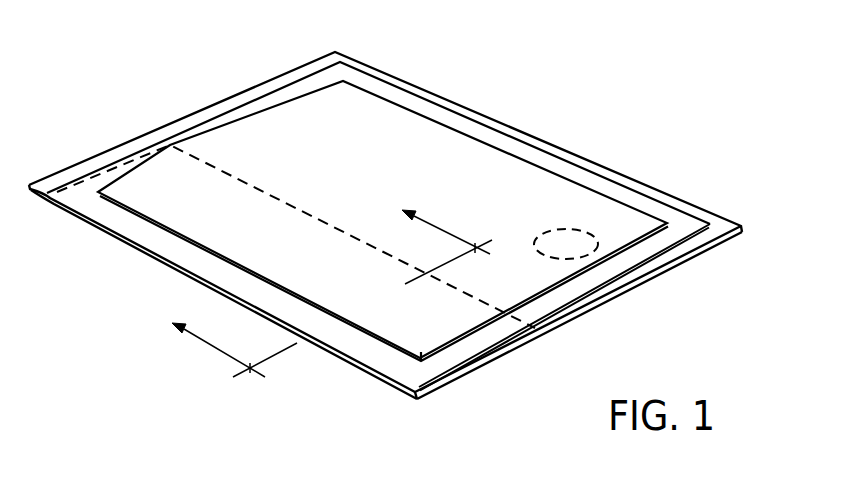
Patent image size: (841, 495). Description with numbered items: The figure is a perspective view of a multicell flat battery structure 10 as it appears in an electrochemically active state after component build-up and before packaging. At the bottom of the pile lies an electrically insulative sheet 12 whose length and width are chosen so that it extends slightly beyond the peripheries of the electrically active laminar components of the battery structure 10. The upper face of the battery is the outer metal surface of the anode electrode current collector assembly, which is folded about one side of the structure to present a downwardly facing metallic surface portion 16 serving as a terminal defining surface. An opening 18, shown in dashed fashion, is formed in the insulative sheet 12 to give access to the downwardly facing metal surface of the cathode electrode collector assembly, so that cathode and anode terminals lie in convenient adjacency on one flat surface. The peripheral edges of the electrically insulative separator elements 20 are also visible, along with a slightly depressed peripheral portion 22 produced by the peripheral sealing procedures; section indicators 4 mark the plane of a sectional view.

The multicell flat battery structure 10 is at (557, 140).
The electrically insulative sheet 12 is at (683, 253).
The downwardly facing metallic surface portion 16 is at (494, 372).
The opening 18 is at (562, 235).
The electrically insulative separator elements 20 is at (258, 86).
The slightly depressed peripheral portion 22 is at (477, 137).
The section line 4- 4 is at (339, 301).